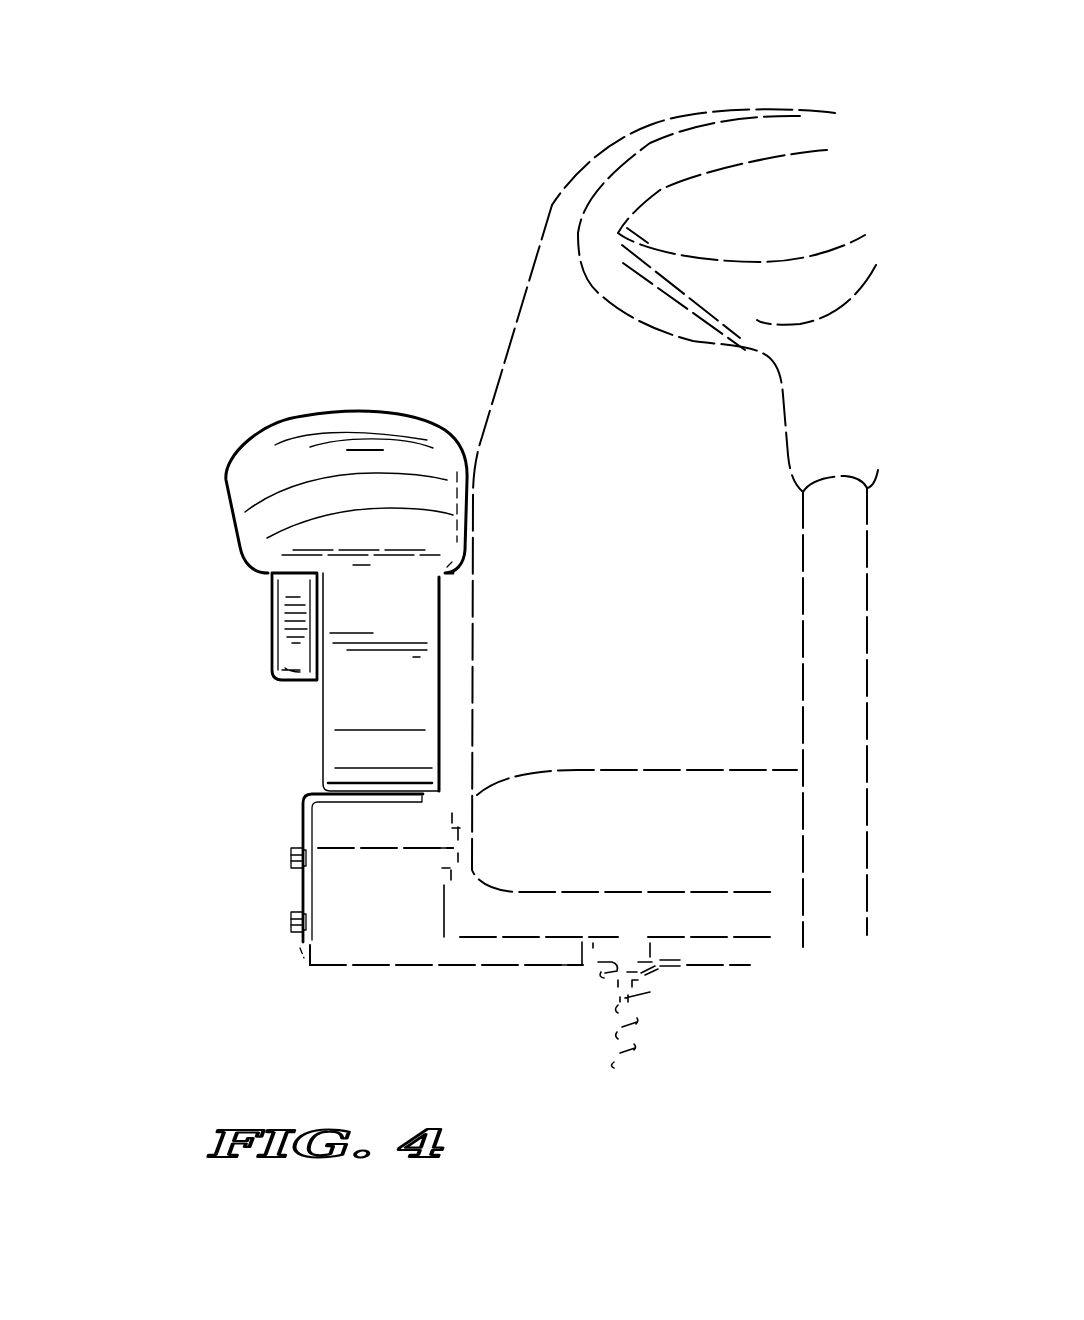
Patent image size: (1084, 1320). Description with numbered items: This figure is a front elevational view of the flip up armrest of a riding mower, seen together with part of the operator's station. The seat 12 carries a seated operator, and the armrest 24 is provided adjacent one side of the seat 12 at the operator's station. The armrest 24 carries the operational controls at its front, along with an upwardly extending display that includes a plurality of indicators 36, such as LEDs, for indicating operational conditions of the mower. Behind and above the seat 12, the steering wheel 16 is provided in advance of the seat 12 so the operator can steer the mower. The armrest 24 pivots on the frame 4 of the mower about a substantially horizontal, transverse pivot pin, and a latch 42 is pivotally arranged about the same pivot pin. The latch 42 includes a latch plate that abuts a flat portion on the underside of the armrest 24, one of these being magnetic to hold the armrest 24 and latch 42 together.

The frame 4 is at (365, 968).
The seat 12 is at (660, 573).
The steering wheel 16 is at (810, 113).
The armrest 24 is at (338, 383).
The indicators 36 is at (245, 487).
The latch 42 is at (302, 817).